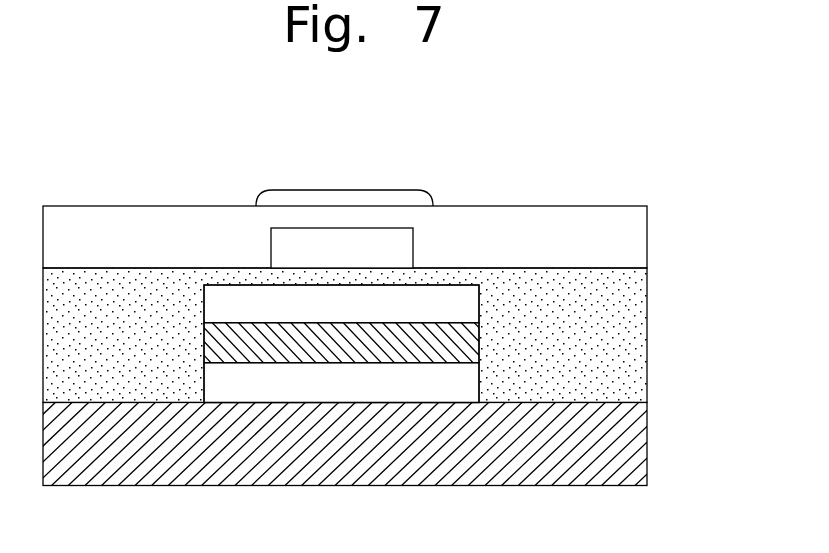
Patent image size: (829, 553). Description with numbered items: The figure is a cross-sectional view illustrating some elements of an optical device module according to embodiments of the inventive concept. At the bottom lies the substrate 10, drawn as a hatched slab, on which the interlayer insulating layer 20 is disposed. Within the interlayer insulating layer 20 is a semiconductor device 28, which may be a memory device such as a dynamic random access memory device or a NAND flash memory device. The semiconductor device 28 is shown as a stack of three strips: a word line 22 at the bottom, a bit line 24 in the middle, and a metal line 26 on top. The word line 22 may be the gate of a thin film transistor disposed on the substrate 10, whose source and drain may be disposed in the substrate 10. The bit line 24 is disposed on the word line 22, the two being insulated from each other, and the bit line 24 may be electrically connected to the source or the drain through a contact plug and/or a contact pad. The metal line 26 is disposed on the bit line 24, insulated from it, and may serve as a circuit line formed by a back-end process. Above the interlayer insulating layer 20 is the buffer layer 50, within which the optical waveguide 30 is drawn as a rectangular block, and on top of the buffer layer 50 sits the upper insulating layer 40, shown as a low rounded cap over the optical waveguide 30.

The substrate 10 is at (638, 441).
The interlayer insulating layer 20 is at (638, 278).
The word line 22 is at (472, 383).
The bit line 24 is at (472, 345).
The metal line 26 is at (472, 308).
The semiconductor device 28 is at (460, 344).
The optical waveguide 30 is at (390, 240).
The upper insulating layer 40 is at (313, 200).
The buffer layer 50 is at (638, 233).